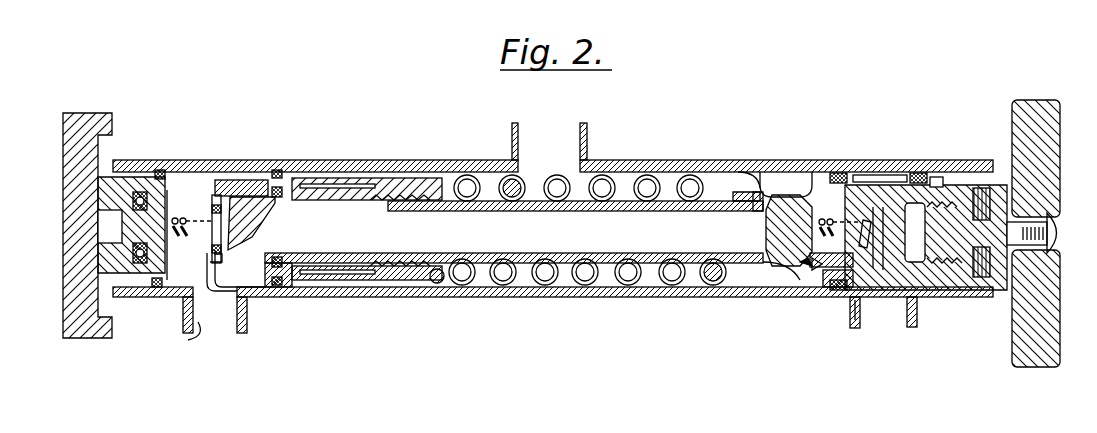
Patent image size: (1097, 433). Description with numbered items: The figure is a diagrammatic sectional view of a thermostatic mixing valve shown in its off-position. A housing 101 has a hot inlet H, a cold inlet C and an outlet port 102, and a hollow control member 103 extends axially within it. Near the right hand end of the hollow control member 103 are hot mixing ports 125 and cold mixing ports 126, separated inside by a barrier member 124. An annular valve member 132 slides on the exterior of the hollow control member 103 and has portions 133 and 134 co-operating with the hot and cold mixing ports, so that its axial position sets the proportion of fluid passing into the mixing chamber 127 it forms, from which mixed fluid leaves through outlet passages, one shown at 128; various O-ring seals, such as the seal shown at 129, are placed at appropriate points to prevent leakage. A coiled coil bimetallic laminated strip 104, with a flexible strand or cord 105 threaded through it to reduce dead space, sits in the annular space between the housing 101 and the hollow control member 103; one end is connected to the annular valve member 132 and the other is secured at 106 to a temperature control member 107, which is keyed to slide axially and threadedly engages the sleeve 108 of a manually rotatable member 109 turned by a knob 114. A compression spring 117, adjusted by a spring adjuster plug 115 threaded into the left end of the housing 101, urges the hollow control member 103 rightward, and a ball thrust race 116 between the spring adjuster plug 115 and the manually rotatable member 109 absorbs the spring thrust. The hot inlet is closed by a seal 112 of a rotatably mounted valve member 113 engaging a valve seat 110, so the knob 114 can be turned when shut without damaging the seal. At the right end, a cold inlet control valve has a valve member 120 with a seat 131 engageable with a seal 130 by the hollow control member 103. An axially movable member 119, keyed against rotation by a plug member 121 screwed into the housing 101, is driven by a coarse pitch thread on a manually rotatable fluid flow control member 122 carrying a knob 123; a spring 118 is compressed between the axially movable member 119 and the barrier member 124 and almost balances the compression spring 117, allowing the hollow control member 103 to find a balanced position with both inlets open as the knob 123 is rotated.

The housing 101 is at (260, 160).
The outlet port 102 is at (520, 135).
The hollow control member 103 is at (547, 208).
The coiled coil bimetallic laminated strip 104 is at (457, 176).
The strand or cord 105 is at (518, 180).
The securing point of bimetallic element 106 is at (441, 281).
The temperature control member 107 is at (362, 281).
The sleeve 108 is at (328, 297).
The manually rotatable member 109 is at (218, 285).
The valve seat 110 is at (214, 247).
The seal 112 is at (216, 205).
The valve member 113 is at (262, 232).
The knob 114 is at (88, 148).
The spring adjuster plug 115 is at (117, 192).
The ball thrust race 116 is at (143, 287).
The compression spring 117 is at (182, 218).
The spring 118 is at (833, 237).
The axially movable member 119 is at (882, 248).
The valve member 120 is at (863, 197).
The plug member 121 is at (950, 177).
The manually rotatable fluid flow control member 122 is at (953, 262).
The knob 123 is at (1023, 143).
The barrier member 124 is at (772, 225).
The hot mixing ports 125 is at (787, 258).
The cold mixing ports 126 is at (810, 268).
The mixing chamber 127 is at (788, 190).
The outlet passage 128 is at (755, 180).
The seal 129 is at (743, 190).
The seal 130 is at (818, 226).
The seat 131 is at (830, 273).
The annular valve member 132 is at (767, 173).
The portion of valve member 133 is at (770, 281).
The portion of valve member 134 is at (806, 268).
The hot inlet H is at (186, 326).
The cold inlet C is at (855, 320).